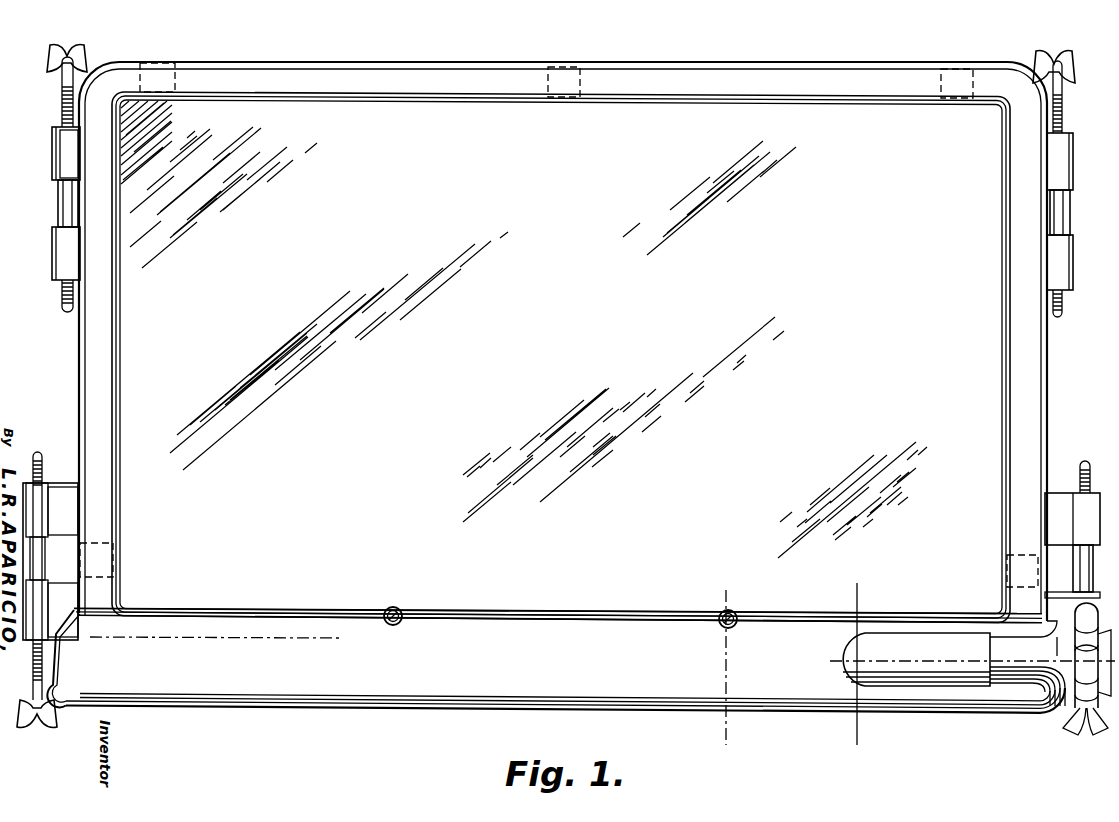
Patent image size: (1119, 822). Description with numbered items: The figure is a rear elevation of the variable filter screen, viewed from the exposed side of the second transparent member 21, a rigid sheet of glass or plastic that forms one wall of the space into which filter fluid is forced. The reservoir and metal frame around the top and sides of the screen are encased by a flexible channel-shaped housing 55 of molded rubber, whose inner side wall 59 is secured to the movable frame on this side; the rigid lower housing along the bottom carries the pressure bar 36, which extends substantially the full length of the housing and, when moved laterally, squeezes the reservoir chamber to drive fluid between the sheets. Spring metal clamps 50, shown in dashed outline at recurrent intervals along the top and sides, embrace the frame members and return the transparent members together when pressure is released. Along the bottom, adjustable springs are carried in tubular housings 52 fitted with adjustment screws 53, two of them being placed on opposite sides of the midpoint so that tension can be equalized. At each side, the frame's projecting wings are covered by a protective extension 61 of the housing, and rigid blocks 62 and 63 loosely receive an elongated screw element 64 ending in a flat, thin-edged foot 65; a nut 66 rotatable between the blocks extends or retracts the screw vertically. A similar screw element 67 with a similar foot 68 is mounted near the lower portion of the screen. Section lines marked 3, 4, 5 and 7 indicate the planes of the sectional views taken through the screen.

The second transparent member 21 is at (975, 368).
The flexible channel-shaped housing 55 is at (357, 47).
The inner side wall 59 is at (97, 346).
The spring metal clamps 50 is at (960, 78).
The pressure bar 36 is at (453, 689).
The tubular housings 52 is at (401, 610).
The adjustment screws 53 is at (401, 623).
The protective extension 61 is at (52, 158).
The rigid block 62 is at (63, 168).
The rigid block 63 is at (62, 257).
The screw element 64 is at (62, 105).
The foot 65 is at (49, 63).
The nut 66 is at (58, 221).
The screw element 67 is at (56, 437).
The foot 68 is at (55, 708).
The section line 3- 3 is at (853, 583).
The section line 4 is at (830, 661).
The section line 5- 5 is at (722, 585).
The section line 7- 7 is at (99, 634).